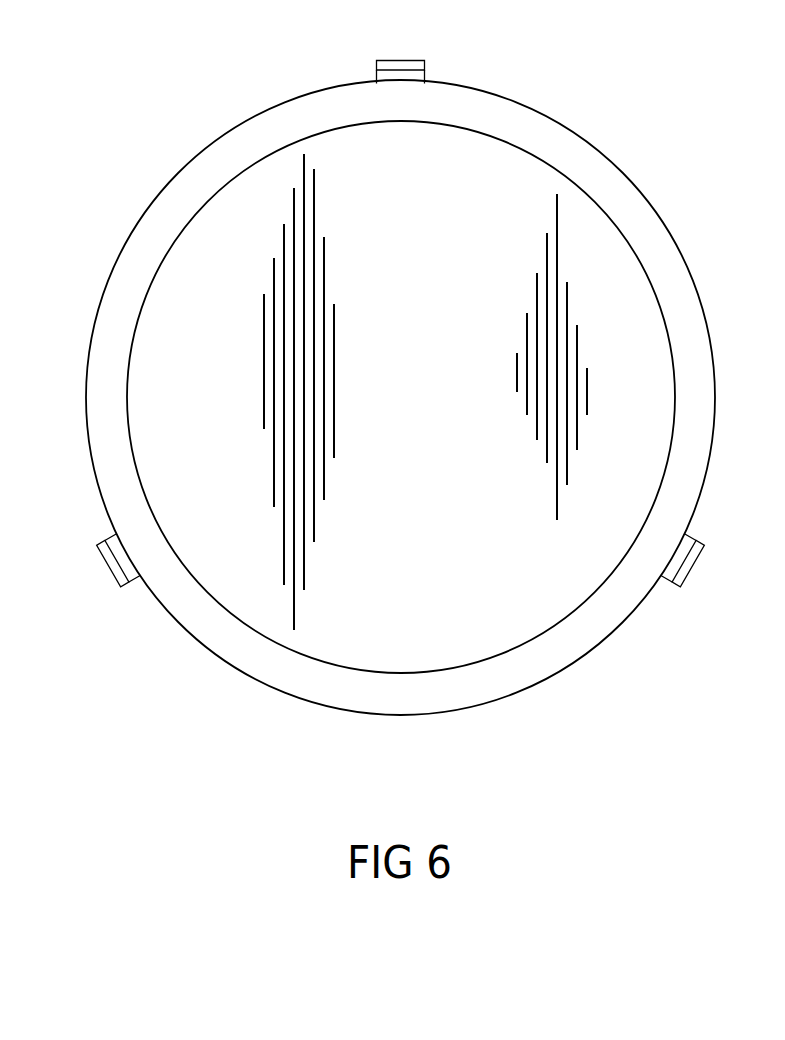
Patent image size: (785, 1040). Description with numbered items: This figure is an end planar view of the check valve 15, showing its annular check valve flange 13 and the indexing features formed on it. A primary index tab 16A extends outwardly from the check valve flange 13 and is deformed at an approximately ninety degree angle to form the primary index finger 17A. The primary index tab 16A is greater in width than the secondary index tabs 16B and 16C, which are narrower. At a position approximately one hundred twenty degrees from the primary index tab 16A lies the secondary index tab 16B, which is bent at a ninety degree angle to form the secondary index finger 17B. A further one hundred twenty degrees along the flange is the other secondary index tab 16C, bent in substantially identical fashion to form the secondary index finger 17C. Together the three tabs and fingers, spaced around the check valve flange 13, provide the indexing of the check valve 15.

The check valve flange 13 is at (585, 150).
The check valve 15 is at (413, 411).
The primary index tab 16A is at (405, 78).
The secondary index tab 16B is at (130, 573).
The secondary index tab 16C is at (672, 565).
The primary index finger 17A is at (401, 66).
The secondary index finger 17B is at (113, 570).
The secondary index finger 17C is at (690, 565).